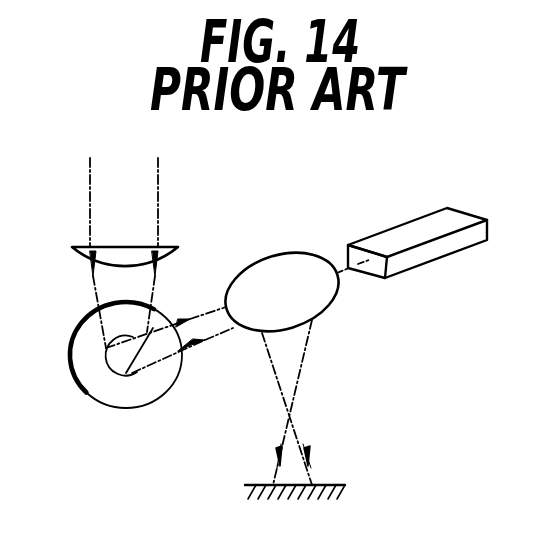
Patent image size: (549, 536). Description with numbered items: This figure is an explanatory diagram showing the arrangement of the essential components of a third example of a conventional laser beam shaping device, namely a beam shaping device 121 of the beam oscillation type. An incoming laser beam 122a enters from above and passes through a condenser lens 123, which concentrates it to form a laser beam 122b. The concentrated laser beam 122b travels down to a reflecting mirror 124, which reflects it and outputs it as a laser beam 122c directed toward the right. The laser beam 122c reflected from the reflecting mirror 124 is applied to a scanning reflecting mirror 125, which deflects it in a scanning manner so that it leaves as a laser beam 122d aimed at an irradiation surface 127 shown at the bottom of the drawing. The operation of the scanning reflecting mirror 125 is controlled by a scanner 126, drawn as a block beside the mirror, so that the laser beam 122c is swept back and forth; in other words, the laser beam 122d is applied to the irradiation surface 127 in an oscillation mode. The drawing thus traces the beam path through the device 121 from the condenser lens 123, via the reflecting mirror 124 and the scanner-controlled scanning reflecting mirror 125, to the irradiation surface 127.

The beam shaping device 121 is at (300, 216).
The laser beam 122a is at (159, 193).
The laser beam 122b is at (154, 284).
The laser beam 122c is at (188, 355).
The laser beam 122d is at (300, 382).
The condenser lens 123 is at (80, 244).
The reflecting mirror 124 is at (97, 407).
The scanning reflecting mirror 125 is at (328, 297).
The scanner 126 is at (452, 247).
The irradiation surface 127 is at (335, 483).